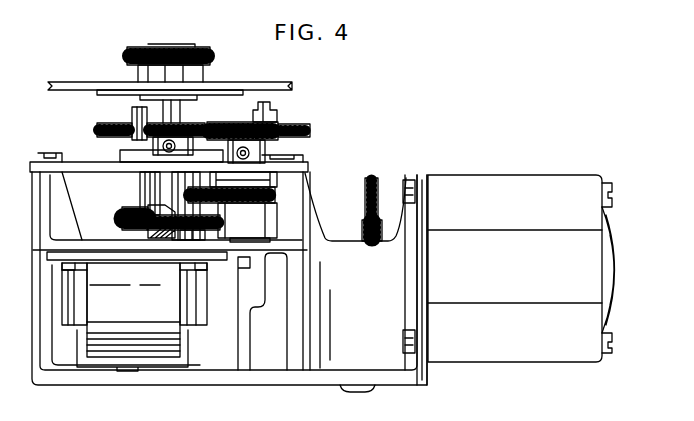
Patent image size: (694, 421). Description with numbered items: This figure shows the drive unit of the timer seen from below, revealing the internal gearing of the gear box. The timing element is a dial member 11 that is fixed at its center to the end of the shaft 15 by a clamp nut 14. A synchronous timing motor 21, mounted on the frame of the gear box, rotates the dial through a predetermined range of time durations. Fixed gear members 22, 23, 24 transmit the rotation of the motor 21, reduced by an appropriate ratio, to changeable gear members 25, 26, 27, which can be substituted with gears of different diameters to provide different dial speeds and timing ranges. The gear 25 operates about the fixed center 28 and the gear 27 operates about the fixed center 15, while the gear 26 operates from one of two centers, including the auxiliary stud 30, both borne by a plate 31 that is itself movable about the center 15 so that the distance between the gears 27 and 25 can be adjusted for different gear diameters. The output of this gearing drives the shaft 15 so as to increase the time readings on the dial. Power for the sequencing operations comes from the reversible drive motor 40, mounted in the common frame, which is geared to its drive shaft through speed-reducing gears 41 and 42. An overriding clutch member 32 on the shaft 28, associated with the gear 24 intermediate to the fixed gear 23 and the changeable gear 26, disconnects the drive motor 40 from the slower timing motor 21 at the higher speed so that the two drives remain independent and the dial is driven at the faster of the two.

The dial member 11 is at (110, 86).
The clamp nut 14 is at (212, 56).
The shaft 15 is at (174, 113).
The motor 21 is at (140, 315).
The fixed gear member 22 is at (122, 218).
The fixed gear member 23 is at (165, 215).
The fixed gear member 24 is at (268, 196).
The changeable gear member 25 is at (278, 140).
The changeable gear member 26 is at (310, 129).
The changeable gear member 27 is at (97, 129).
The fixed center 28 is at (256, 113).
The auxiliary stud 30 is at (132, 113).
The plate 31 is at (128, 158).
The overriding clutch member 32 is at (258, 221).
The drive motor 40 is at (512, 217).
The speed-reducing gear 41 is at (362, 228).
The speed-reducing gear 42 is at (365, 195).